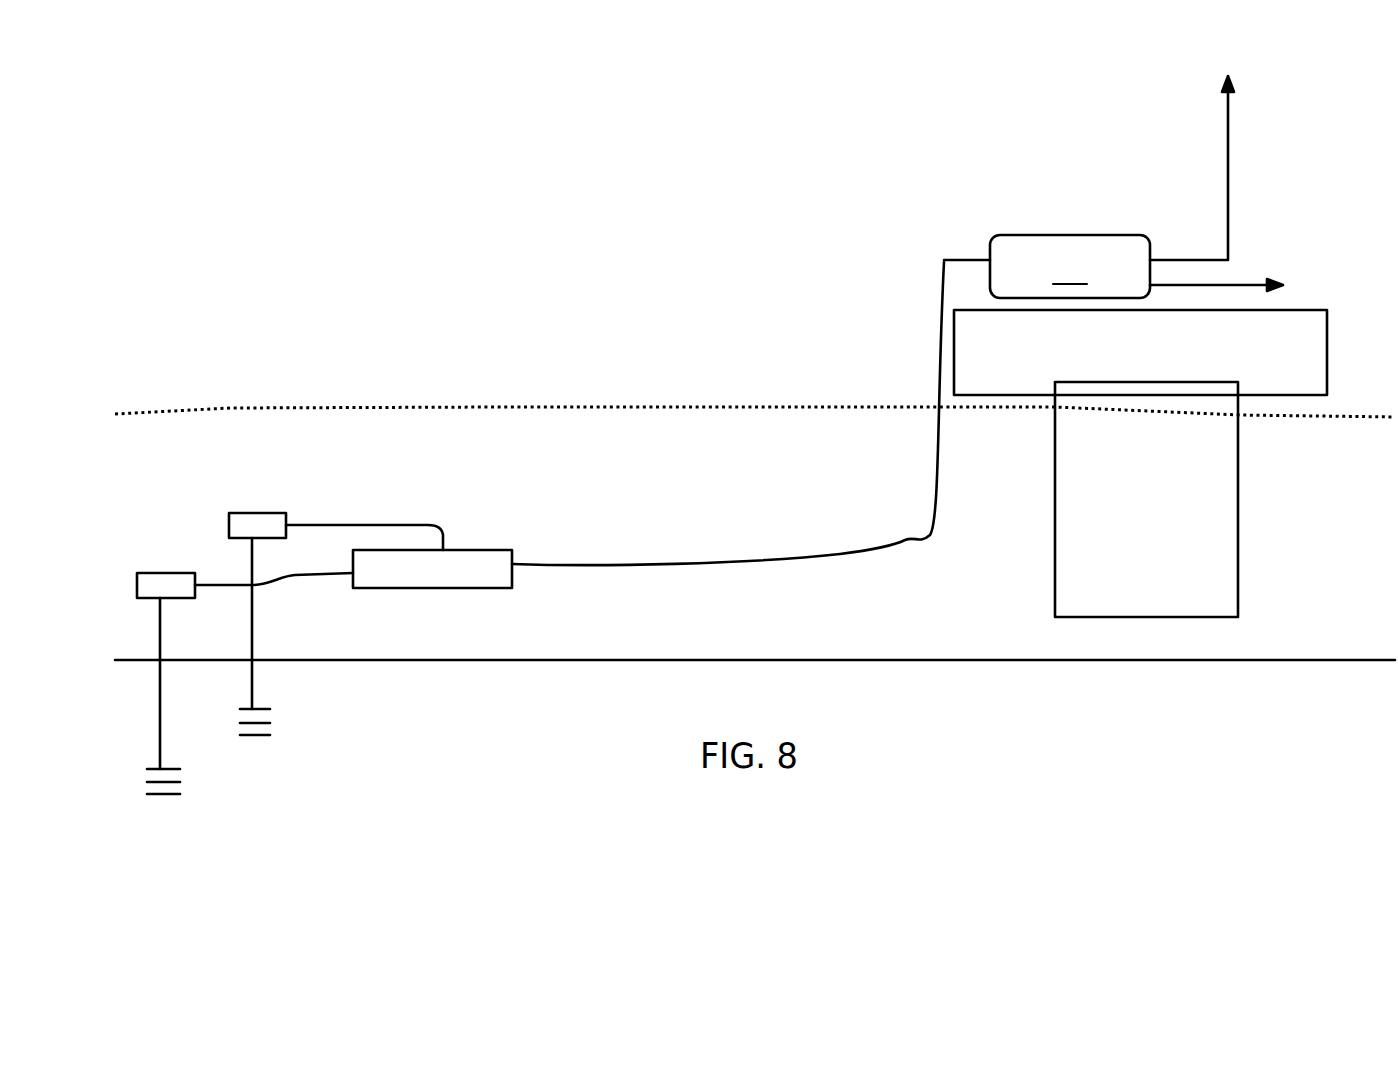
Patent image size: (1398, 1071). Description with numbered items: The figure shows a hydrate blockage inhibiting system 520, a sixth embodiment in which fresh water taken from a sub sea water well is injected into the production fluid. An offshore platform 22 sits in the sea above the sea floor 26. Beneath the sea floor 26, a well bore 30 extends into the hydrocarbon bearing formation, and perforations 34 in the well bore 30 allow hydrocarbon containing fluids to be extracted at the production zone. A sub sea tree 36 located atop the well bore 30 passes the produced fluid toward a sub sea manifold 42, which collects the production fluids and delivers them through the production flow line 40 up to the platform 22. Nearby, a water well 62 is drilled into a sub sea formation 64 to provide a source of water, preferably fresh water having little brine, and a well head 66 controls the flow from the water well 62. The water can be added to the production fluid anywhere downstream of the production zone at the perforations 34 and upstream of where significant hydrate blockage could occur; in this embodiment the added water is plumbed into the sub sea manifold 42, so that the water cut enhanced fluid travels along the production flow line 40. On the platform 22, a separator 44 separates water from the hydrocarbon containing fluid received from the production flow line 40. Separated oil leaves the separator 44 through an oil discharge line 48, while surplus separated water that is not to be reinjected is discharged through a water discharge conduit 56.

The system 520 is at (406, 110).
The offshore platform 22 is at (1328, 365).
The sea floor 26 is at (595, 660).
The well bore 30 is at (160, 648).
The perforations 34 is at (180, 769).
The sub sea tree 36 is at (155, 573).
The production flow line 40 is at (840, 560).
The sub sea manifold 42 is at (443, 588).
The separator 44 is at (1047, 266).
The oil discharge line 48 is at (1240, 283).
The water discharge conduit 56 is at (1230, 115).
The water well 62 is at (252, 648).
The sub sea formation 64 is at (270, 709).
The well head 66 is at (255, 513).